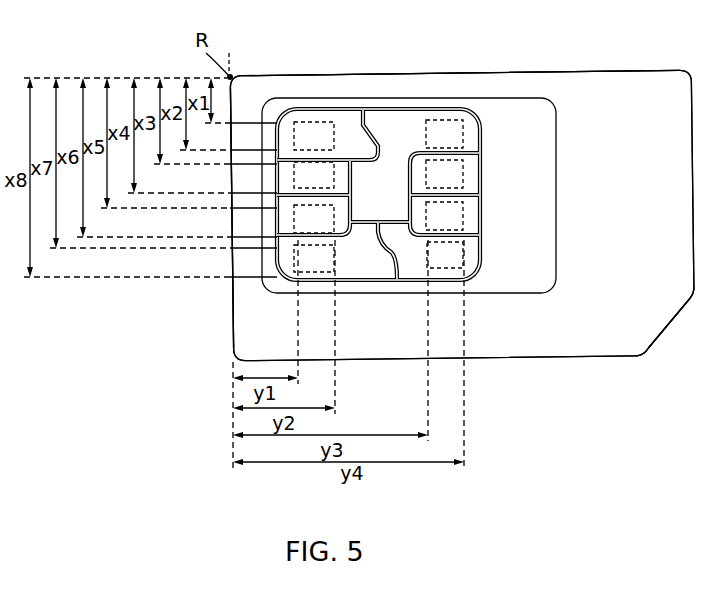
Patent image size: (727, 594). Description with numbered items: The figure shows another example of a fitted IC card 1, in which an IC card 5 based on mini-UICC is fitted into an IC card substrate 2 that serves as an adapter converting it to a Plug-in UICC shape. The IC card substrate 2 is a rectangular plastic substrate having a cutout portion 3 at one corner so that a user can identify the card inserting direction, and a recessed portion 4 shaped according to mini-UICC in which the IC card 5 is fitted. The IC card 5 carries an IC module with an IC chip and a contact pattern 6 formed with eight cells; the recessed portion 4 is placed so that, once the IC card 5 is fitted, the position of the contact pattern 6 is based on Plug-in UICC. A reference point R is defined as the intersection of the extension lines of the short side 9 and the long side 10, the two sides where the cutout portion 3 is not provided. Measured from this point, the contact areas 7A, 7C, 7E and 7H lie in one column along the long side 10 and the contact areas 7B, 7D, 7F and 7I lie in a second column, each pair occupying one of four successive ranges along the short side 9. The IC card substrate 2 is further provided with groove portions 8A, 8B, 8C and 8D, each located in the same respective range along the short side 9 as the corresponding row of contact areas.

The fitted IC card 1 is at (590, 69).
The IC card substrate 2 is at (552, 82).
The cutout portion 3 is at (670, 326).
The recessed portion 4 is at (334, 98).
The IC card 5 is at (431, 108).
The contact pattern 6 is at (383, 120).
The contact area 7A is at (332, 137).
The contact area 7B is at (453, 137).
The contact area 7C is at (328, 184).
The contact area 7D is at (453, 175).
The contact area 7E is at (330, 209).
The contact area 7F is at (453, 218).
The contact area 7H is at (328, 259).
The contact area 7I is at (453, 259).
The groove portion 8A is at (247, 139).
The groove portion 8B is at (247, 176).
The groove portion 8C is at (247, 222).
The groove portion 8D is at (247, 262).
The short side 9 is at (218, 298).
The long side 10 is at (498, 62).